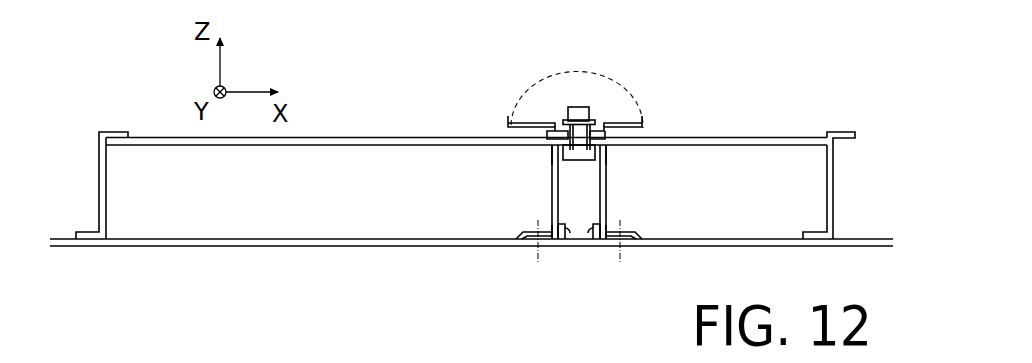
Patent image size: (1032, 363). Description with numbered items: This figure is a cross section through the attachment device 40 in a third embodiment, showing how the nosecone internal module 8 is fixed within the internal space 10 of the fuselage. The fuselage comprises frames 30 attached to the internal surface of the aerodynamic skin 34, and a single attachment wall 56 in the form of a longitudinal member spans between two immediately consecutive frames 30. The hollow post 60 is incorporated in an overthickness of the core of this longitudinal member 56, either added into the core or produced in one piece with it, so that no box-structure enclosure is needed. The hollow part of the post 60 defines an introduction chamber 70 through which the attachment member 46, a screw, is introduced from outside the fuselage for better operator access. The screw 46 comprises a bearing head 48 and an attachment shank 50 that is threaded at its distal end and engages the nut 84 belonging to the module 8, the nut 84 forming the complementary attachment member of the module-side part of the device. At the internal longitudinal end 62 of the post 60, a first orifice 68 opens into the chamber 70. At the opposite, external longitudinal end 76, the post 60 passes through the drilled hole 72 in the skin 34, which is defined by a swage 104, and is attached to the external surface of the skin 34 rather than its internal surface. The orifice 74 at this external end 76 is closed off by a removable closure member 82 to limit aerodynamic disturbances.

The nosecone internal module 8 is at (608, 73).
The internal space 10 is at (405, 98).
The fuselage frames 30 is at (113, 130).
The fuselage skin 34 is at (355, 247).
The attachment device 40 is at (610, 198).
The attachment member 46 is at (598, 152).
The bearing head 48 is at (550, 152).
The attachment shank 50 is at (612, 136).
The attachment wall 56 is at (307, 137).
The hollow post 60 is at (550, 193).
The internal longitudinal end 62 is at (523, 126).
The first orifice 68 is at (568, 107).
The introduction chamber 70 is at (588, 237).
The second orifice 72 is at (599, 245).
The orifice at external end 74 is at (567, 245).
The external longitudinal end 76 is at (547, 247).
The closure member 82 is at (592, 249).
The nut 84 is at (583, 107).
The swage 104 is at (533, 242).